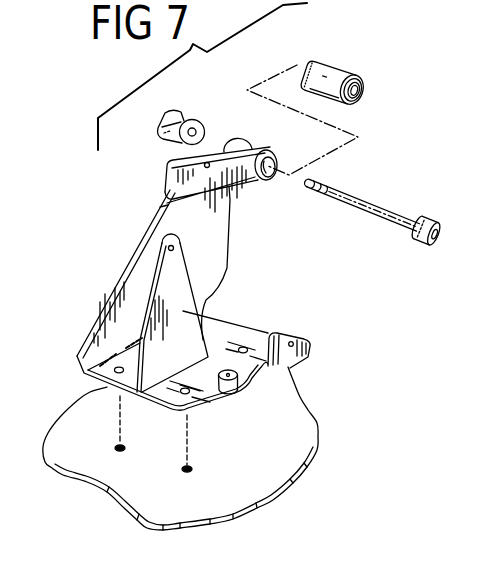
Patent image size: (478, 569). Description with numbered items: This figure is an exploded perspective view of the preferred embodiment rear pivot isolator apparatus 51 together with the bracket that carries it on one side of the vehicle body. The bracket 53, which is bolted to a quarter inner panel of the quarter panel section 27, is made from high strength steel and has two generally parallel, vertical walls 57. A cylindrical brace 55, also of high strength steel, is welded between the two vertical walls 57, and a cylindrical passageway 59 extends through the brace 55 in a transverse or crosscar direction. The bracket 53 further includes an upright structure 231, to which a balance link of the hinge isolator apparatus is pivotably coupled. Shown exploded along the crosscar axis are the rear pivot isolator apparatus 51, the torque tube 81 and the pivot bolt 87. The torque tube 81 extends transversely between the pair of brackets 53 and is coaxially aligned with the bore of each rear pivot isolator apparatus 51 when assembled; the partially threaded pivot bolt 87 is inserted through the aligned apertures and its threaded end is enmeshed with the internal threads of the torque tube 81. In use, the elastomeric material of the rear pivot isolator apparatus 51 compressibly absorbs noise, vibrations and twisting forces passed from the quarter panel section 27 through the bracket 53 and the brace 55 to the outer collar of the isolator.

The quarter panel section 27 is at (251, 490).
The rear pivot isolator apparatus 51 is at (361, 66).
The bracket 53 is at (102, 342).
The cylindrical brace 55 is at (168, 164).
The vertical walls 57 is at (168, 201).
The cylindrical passageway 59 is at (262, 180).
The torque tube 81 is at (193, 120).
The pivot bolt 87 is at (377, 202).
The upright structure 231 is at (182, 306).